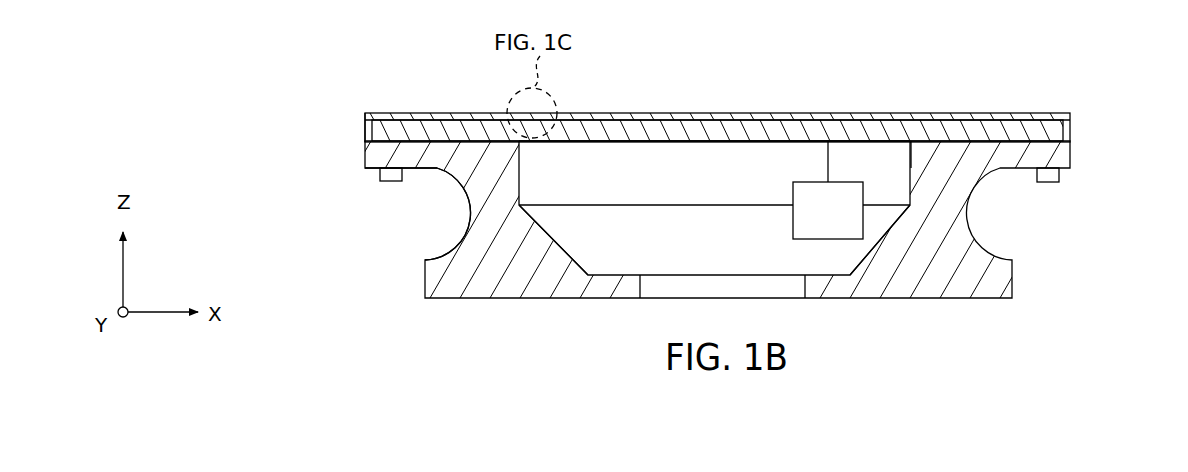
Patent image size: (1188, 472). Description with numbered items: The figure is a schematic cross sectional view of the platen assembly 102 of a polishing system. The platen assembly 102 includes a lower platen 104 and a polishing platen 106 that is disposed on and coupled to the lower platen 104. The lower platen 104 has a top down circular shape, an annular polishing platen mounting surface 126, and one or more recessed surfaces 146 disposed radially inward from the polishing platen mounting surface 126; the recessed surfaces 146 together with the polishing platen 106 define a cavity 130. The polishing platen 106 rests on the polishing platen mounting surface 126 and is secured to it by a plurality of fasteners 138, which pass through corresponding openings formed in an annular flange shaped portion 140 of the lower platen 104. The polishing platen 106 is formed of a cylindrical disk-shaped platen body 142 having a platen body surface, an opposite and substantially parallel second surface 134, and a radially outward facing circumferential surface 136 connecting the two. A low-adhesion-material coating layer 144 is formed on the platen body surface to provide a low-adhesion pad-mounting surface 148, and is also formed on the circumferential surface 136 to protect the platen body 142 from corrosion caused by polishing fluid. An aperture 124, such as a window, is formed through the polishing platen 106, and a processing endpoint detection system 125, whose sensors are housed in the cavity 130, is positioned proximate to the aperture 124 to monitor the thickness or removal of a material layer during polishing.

The platen assembly 102 is at (1034, 72).
The lower platen 104 is at (519, 277).
The polishing platen 106 is at (1062, 129).
The aperture 124 is at (831, 104).
The processing endpoint detection system 125 is at (850, 220).
The polishing platen mounting surface 126 is at (436, 140).
The cavity 130 is at (757, 185).
The second surface 134 is at (677, 148).
The circumferential surface 136 is at (366, 127).
The fasteners 138 is at (1047, 183).
The annular flange shaped portion 140 is at (419, 197).
The platen body 142 is at (690, 120).
The low-adhesion-material coating layer 144 is at (904, 118).
The recessed surfaces 146 is at (519, 175).
The pad-mounting surface 148 is at (723, 113).